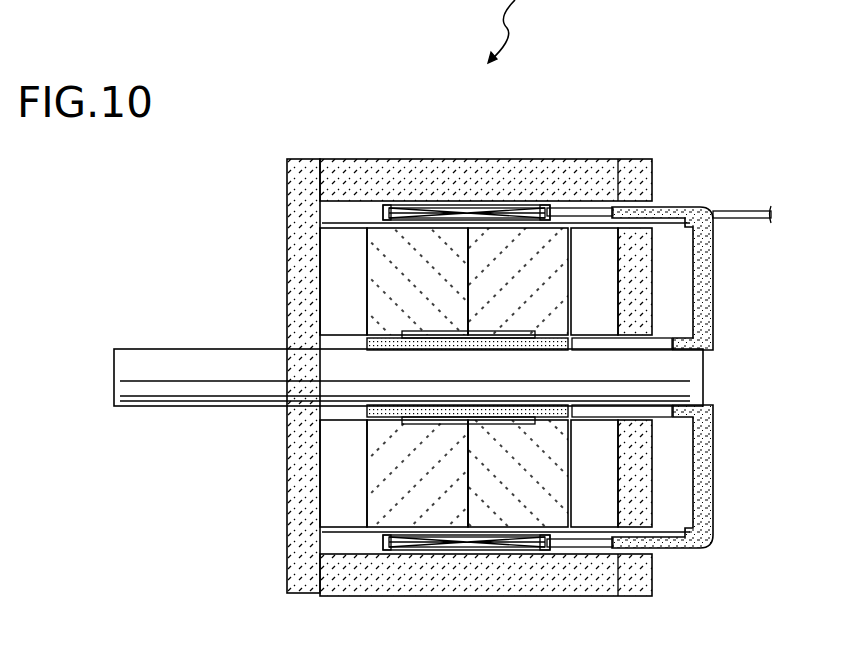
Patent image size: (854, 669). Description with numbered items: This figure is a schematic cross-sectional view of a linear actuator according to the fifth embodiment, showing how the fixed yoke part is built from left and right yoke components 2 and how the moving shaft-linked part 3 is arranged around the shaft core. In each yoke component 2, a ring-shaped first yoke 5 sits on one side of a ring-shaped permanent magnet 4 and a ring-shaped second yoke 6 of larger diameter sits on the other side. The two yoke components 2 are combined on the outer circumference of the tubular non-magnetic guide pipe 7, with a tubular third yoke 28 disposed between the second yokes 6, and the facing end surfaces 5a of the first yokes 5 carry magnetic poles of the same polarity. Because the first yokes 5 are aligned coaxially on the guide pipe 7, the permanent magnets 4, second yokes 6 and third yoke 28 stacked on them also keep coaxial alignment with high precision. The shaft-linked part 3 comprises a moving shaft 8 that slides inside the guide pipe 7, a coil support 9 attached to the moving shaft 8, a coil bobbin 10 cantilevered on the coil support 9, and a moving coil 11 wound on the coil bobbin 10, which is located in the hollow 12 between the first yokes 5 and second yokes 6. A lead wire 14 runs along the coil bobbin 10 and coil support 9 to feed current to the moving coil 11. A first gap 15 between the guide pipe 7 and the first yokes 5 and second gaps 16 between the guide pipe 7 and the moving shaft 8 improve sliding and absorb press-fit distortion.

The yoke component 2 is at (289, 81).
The shaft-linked part 3 is at (768, 328).
The permanent magnet 4 is at (377, 240).
The first yoke 5 is at (387, 208).
The end surface of the first yoke 5a is at (468, 247).
The second yoke 6 is at (310, 216).
The guide pipe 7 is at (380, 336).
The moving shaft 8 is at (690, 372).
The coil support 9 is at (708, 322).
The coil bobbin 10 is at (388, 213).
The moving coil 11 is at (518, 207).
The hollow 12 is at (334, 218).
The lead wire 14 is at (745, 213).
The first gap 15 is at (505, 333).
The second gap 16 is at (390, 344).
The third yoke 28 is at (343, 247).